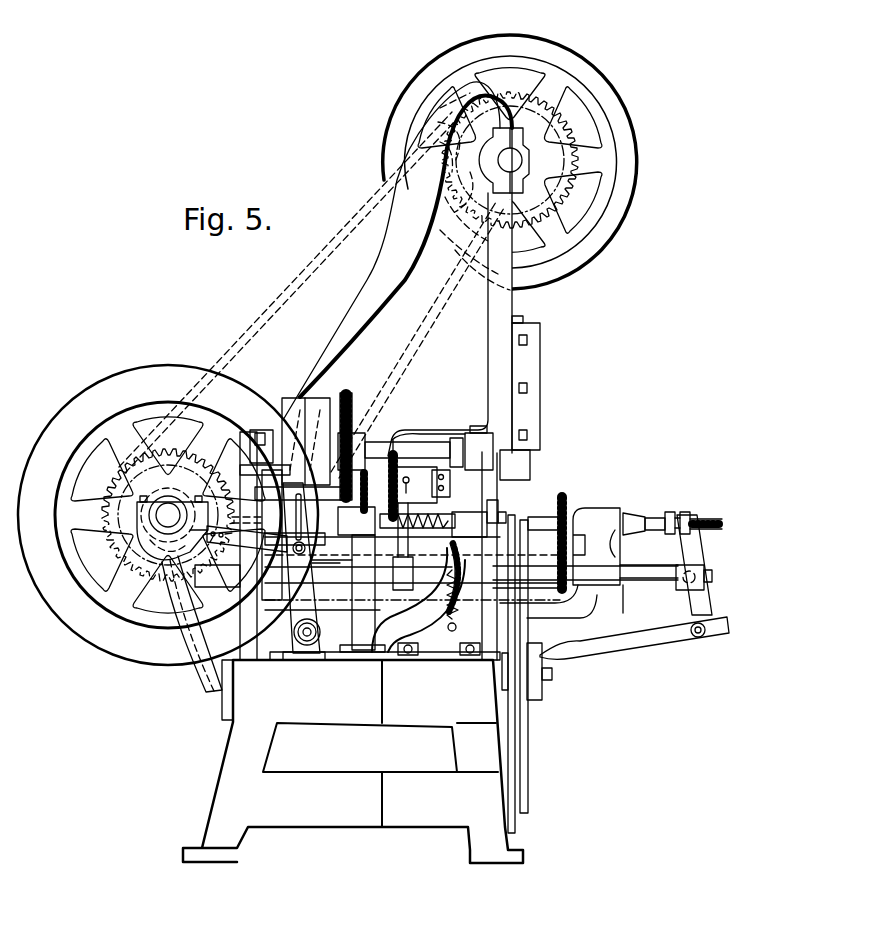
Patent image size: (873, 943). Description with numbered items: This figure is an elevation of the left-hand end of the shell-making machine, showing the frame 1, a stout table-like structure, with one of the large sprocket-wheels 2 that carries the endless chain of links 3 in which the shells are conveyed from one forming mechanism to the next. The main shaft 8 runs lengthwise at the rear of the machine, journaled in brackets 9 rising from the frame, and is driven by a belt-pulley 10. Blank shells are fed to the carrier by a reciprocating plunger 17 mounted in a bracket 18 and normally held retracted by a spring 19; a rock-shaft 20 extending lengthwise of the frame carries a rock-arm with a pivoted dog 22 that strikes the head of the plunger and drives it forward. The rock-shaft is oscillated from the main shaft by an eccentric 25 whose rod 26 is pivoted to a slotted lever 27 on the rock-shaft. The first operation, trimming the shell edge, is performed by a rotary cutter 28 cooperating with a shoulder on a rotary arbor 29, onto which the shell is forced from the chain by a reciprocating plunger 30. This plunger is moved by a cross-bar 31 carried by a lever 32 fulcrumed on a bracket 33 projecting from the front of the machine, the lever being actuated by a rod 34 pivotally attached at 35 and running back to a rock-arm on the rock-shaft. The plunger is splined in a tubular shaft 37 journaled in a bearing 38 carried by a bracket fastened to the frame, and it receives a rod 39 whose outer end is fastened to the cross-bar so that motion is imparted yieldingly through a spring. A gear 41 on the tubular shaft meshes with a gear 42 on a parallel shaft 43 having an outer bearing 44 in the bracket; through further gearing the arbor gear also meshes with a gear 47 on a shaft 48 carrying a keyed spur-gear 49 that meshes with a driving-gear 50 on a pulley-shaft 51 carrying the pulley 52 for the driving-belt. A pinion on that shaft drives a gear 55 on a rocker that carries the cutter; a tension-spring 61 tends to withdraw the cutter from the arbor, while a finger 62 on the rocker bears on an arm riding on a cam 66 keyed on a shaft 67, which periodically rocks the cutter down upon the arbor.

The frame 1 is at (232, 775).
The sprocket-wheel 2 is at (514, 722).
The links 3 is at (525, 820).
The main shaft 8 is at (168, 515).
The brackets 9 is at (192, 632).
The belt-pulley 10 is at (102, 394).
The reciprocating plunger 17 is at (299, 540).
The bracket 18 is at (418, 600).
The spring 19 is at (456, 562).
The rock-shaft 20 is at (294, 634).
The pivoted dog 22 is at (332, 552).
The eccentric 25 is at (142, 560).
The eccentric rod 26 is at (241, 556).
The lever 27 is at (304, 571).
The rotary cutter 28 is at (498, 503).
The rotary arbor 29 is at (505, 516).
The reciprocating plunger 30 is at (540, 517).
The cross-bar 31 is at (688, 515).
The lever 32 is at (694, 565).
The bracket 33 is at (634, 638).
The rod 34 is at (634, 578).
The pivot 35 is at (704, 574).
The tubular shaft 37 is at (634, 513).
The bearing 38 is at (598, 508).
The rod 39 is at (722, 521).
The gear 41 is at (565, 498).
The gear 42 is at (558, 584).
The shaft 43 is at (545, 566).
The outer bearing 44 is at (624, 602).
The gear 47 is at (392, 468).
The shaft 48 is at (356, 490).
The spur-gear 49 is at (340, 507).
The driving-gear 50 is at (352, 396).
The pulley-shaft 51 is at (372, 444).
The pulley 52 is at (318, 400).
The gear 55 is at (397, 437).
The tension-spring 61 is at (460, 616).
The finger 62 is at (426, 498).
The cam 66 is at (398, 562).
The shaft 67 is at (330, 584).